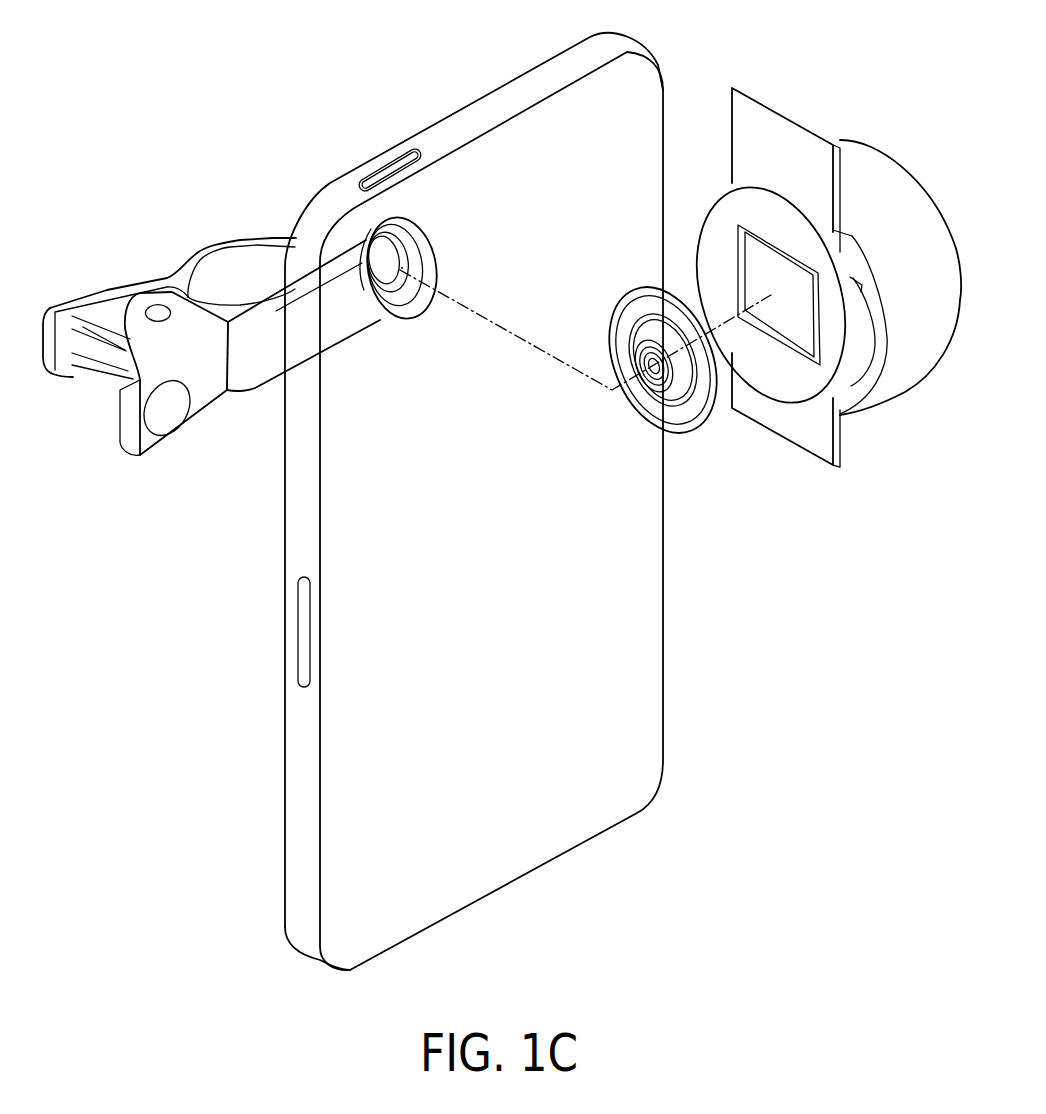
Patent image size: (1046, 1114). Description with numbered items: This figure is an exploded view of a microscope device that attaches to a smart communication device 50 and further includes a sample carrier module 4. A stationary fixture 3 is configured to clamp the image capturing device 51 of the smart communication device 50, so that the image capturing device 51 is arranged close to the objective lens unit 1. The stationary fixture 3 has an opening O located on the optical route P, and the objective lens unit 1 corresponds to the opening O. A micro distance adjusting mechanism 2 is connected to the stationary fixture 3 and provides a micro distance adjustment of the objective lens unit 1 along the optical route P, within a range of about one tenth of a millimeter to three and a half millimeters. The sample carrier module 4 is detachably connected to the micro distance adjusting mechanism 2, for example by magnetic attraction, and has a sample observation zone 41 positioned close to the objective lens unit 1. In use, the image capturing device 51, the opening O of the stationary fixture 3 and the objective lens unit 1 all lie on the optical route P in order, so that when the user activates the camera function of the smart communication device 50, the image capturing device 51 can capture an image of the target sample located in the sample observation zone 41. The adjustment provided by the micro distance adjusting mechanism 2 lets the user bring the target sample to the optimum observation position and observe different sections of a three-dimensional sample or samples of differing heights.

The smart communication device 50 is at (477, 92).
The image capturing device 51 is at (392, 255).
The stationary fixture 3 is at (193, 242).
The micro distance adjusting mechanism 2 is at (626, 305).
The objective lens unit 1 is at (650, 366).
The sample carrier module 4 is at (840, 110).
The sample observation zone 41 is at (758, 255).
The opening O is at (433, 266).
The optical route P is at (541, 355).